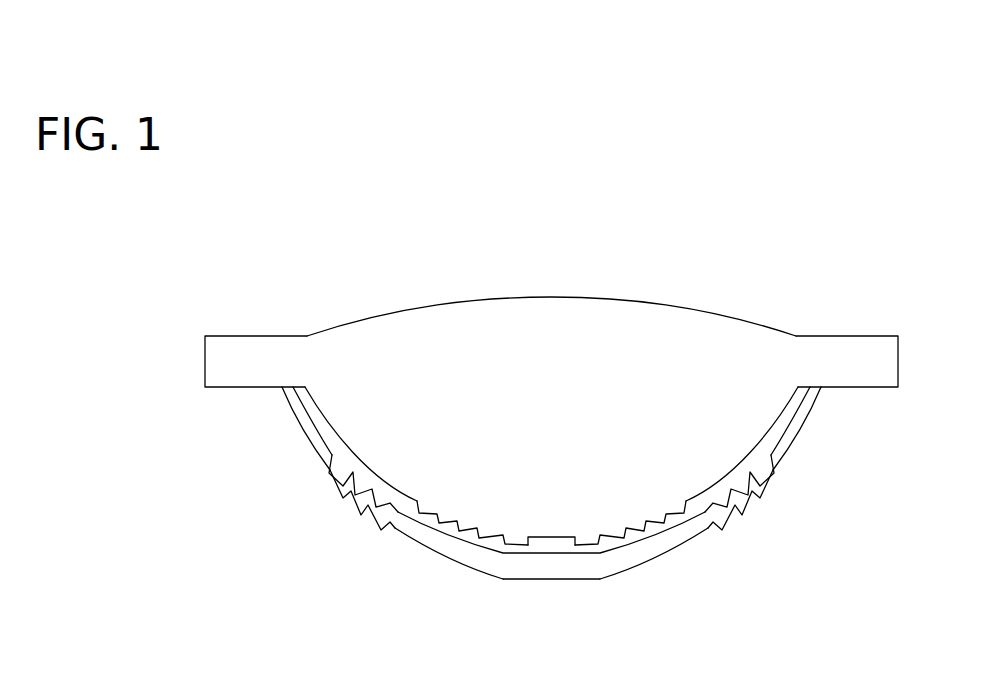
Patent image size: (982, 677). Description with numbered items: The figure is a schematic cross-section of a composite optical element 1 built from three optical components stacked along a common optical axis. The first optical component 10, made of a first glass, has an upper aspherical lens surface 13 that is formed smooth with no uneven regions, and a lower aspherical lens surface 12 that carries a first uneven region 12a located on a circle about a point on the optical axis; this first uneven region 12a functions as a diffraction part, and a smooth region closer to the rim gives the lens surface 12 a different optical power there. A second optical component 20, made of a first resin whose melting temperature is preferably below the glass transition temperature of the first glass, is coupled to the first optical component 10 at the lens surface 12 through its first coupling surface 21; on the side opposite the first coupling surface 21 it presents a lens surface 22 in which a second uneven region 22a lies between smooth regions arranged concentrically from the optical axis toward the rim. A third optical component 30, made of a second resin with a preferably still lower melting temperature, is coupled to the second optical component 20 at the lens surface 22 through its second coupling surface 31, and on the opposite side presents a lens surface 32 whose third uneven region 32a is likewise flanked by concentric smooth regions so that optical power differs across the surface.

The composite optical element 1 is at (690, 219).
The first optical component 10 is at (383, 335).
The lens surface 12 is at (300, 420).
The first uneven region 12a is at (584, 548).
The lens surface 13 is at (491, 296).
The second optical component 20 is at (795, 410).
The first coupling surface 21 is at (778, 448).
The lens surface 22 is at (692, 519).
The second uneven region 22a is at (344, 482).
The third optical component 30 is at (620, 560).
The second coupling surface 31 is at (500, 565).
The lens surface 32 is at (425, 546).
The third uneven region 32a is at (357, 523).